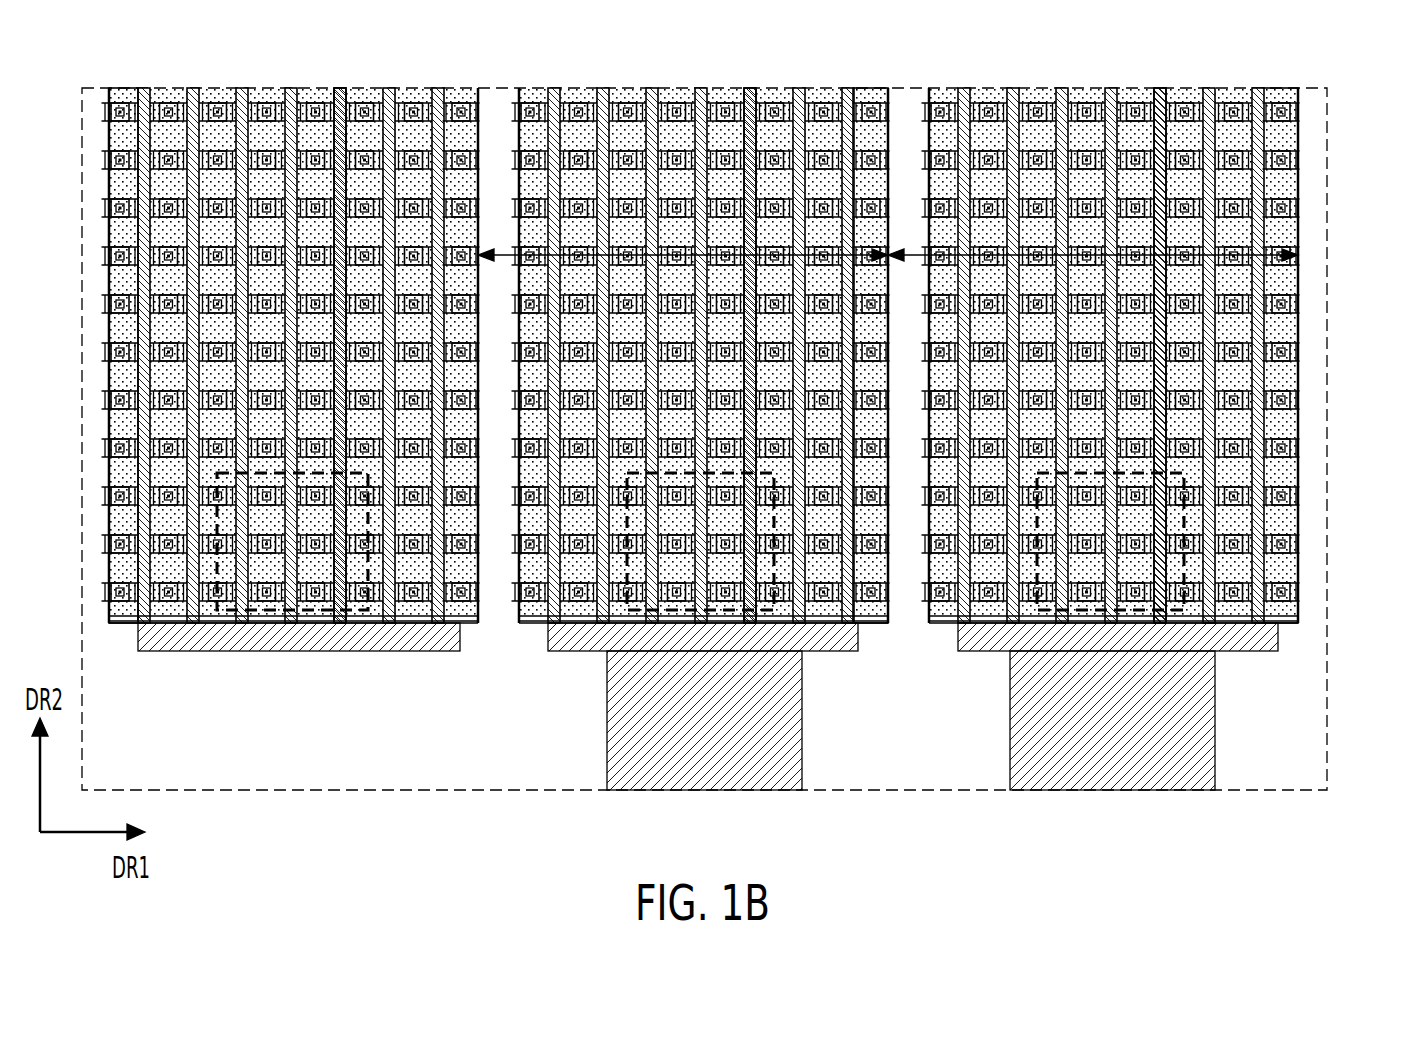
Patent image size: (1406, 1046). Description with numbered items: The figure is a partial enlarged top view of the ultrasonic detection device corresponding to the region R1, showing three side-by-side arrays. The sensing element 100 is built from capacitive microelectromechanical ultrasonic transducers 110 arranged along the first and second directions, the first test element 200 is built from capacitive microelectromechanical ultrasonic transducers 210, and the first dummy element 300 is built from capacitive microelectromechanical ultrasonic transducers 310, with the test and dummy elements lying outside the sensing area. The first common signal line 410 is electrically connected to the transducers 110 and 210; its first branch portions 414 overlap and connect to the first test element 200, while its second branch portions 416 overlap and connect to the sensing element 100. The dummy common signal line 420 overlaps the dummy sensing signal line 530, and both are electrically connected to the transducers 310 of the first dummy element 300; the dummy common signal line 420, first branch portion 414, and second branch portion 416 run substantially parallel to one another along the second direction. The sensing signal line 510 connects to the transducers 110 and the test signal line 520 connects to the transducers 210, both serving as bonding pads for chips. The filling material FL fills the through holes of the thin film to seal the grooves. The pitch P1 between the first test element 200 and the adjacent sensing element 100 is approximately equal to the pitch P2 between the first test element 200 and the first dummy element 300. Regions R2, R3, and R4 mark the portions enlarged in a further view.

The sensing element 100 is at (1111, 428).
The capacitive microelectromechanical ultrasonic transducer 110 is at (1163, 118).
The first test element 200 is at (933, 428).
The capacitive microelectromechanical ultrasonic transducer 210 is at (753, 118).
The first dummy element 300 is at (291, 362).
The capacitive microelectromechanical ultrasonic transducer 310 is at (343, 118).
The first common signal line 410 is at (1103, 326).
The first branch portion 414 is at (876, 95).
The second branch portion 416 is at (1284, 95).
The dummy common signal line 420 is at (121, 95).
The sensing signal line 510 is at (1172, 790).
The test signal line 520 is at (762, 790).
The dummy sensing signal line 530 is at (245, 640).
The filling material FL is at (578, 152).
The pitch P1 is at (965, 256).
The pitch P2 is at (550, 256).
The region R1 is at (1328, 138).
The region R2 is at (370, 612).
The region R3 is at (778, 612).
The region R4 is at (1185, 612).